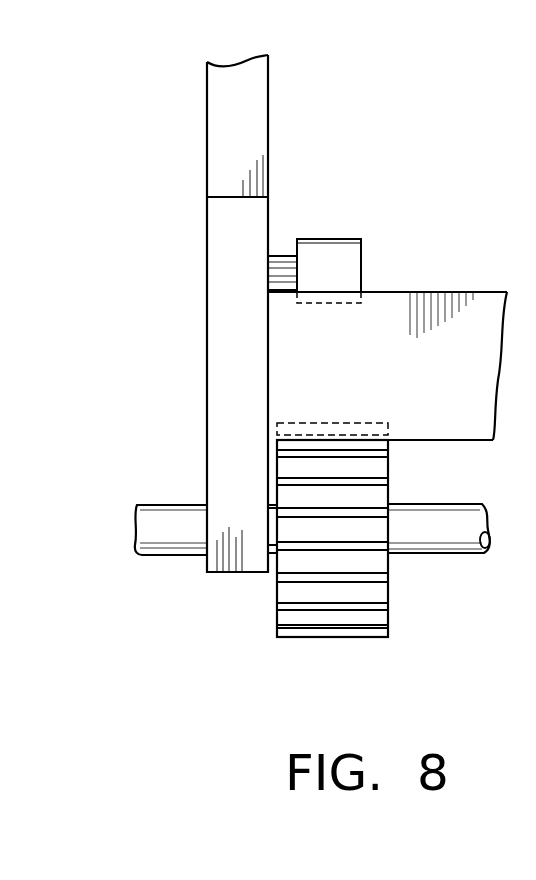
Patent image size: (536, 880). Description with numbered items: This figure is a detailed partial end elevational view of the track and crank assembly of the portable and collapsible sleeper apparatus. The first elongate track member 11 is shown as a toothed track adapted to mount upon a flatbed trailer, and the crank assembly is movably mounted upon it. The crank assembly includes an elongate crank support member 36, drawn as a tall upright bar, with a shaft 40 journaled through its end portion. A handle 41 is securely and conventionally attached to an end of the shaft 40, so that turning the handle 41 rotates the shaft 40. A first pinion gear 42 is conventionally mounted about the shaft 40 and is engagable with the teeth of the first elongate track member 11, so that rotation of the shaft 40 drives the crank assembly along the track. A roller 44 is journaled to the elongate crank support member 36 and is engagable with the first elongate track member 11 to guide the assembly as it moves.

The first elongate track member 11 is at (373, 372).
The elongate crank support member 36 is at (225, 350).
The shaft 40 is at (443, 532).
The handle 41 is at (167, 540).
The first pinion gear 42 is at (337, 592).
The roller 44 is at (327, 252).